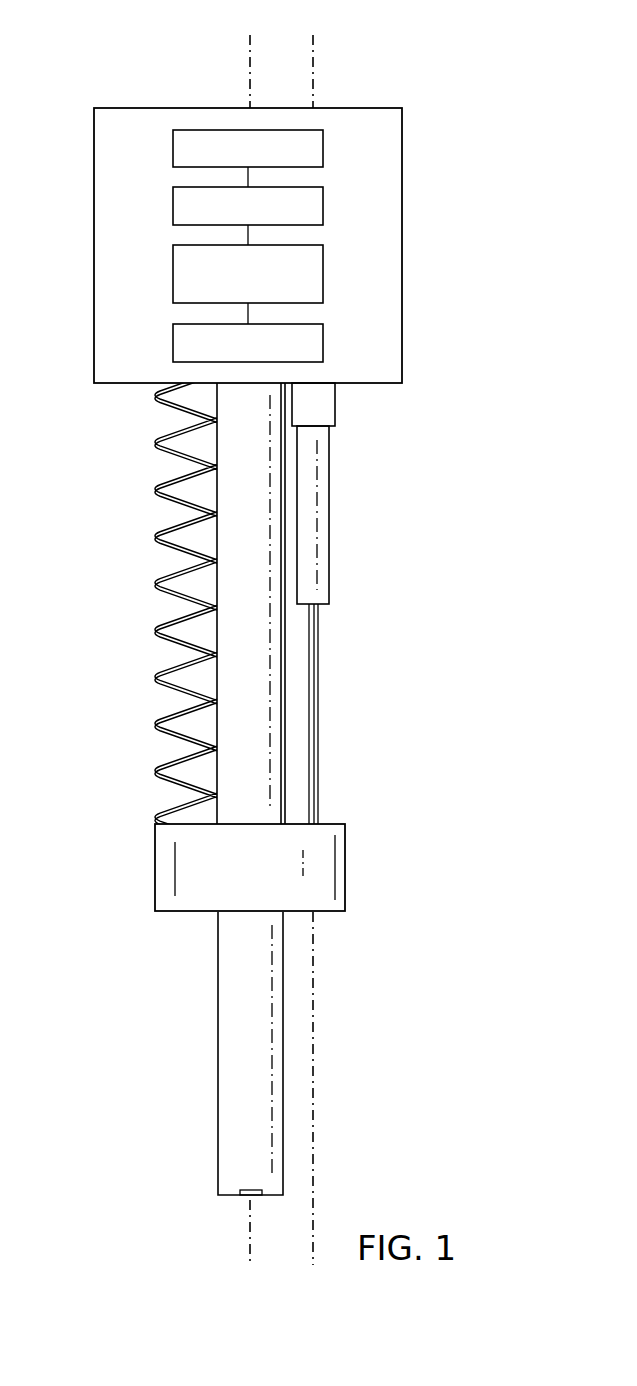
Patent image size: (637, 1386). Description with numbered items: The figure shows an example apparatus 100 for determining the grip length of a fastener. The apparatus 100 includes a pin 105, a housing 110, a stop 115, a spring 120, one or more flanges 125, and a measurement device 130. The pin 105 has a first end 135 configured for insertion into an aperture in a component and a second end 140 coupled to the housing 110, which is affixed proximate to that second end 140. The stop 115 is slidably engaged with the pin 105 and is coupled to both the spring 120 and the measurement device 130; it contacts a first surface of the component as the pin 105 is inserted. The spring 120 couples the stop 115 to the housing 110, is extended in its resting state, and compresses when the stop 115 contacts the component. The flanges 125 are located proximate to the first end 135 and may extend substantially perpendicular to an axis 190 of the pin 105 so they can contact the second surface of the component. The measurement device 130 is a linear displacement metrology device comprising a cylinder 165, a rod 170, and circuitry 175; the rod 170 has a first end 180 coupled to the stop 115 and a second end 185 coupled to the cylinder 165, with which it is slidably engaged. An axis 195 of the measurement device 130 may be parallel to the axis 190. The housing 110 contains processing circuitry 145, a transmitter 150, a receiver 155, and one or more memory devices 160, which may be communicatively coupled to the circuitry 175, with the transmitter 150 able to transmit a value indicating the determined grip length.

The apparatus 100 is at (375, 60).
The pin 105 is at (225, 634).
The housing 110 is at (213, 104).
The stop 115 is at (163, 869).
The spring 120 is at (152, 498).
The flanges 125 is at (240, 1178).
The measurement device 130 is at (341, 603).
The first end of pin 135 is at (226, 1022).
The second end of pin 140 is at (225, 408).
The processing circuitry 145 is at (173, 273).
The transmitter 150 is at (173, 148).
The receiver 155 is at (173, 205).
The memory devices 160 is at (173, 341).
The cylinder 165 is at (323, 535).
The rod 170 is at (319, 718).
The circuitry 175 is at (325, 405).
The first end of rod 180 is at (319, 797).
The second end of rod 185 is at (319, 642).
The axis of pin 190 is at (250, 1236).
The axis of measurement device 195 is at (316, 1058).